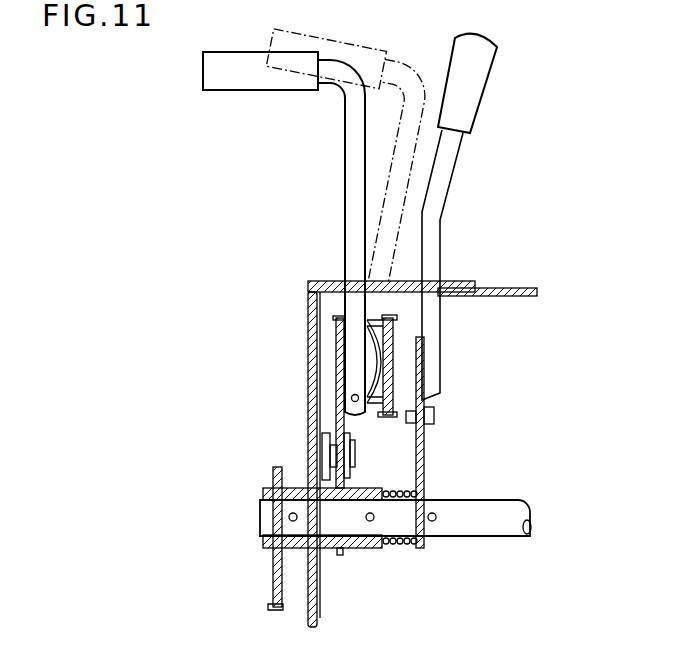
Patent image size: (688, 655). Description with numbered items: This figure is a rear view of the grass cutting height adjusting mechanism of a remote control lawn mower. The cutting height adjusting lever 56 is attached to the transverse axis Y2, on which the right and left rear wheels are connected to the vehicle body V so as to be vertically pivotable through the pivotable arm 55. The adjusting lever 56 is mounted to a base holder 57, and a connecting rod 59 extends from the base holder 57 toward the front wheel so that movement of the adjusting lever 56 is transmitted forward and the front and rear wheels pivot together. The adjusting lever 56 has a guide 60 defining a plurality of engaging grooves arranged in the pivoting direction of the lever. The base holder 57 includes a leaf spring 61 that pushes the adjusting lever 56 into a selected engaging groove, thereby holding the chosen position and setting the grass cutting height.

The pivotable arm 55 is at (273, 580).
The cutting height adjusting lever 56 is at (280, 84).
The base holder 57 is at (314, 316).
The connecting rod 59 is at (309, 433).
The guide 60 is at (372, 283).
The leaf spring 61 is at (366, 347).
The vehicle body V is at (513, 284).
The transverse axis Y2 is at (558, 517).